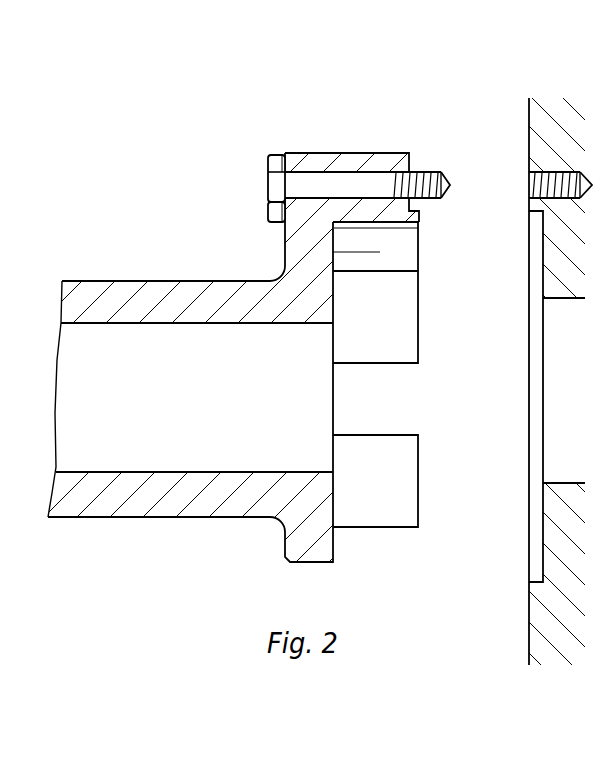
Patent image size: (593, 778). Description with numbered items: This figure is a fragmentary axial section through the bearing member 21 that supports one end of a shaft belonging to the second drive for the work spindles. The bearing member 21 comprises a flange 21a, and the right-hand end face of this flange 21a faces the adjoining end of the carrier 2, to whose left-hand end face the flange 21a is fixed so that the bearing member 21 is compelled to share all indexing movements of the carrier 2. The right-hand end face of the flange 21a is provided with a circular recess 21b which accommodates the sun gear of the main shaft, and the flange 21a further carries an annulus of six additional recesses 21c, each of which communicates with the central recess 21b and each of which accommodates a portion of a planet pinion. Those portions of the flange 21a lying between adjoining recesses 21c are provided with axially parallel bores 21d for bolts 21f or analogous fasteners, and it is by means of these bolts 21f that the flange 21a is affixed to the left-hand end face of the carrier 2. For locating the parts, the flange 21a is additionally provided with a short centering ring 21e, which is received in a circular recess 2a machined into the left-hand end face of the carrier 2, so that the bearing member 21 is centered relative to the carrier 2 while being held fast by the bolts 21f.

The carrier 2 is at (553, 613).
The circular recess 2a is at (542, 580).
The bearing member 21 is at (165, 511).
The flange 21a is at (356, 160).
The circular recess 21b is at (367, 231).
The additional recesses 21c is at (381, 414).
The axially parallel bores 21d is at (300, 187).
The centering ring 21e is at (420, 216).
The bolts 21f is at (268, 201).